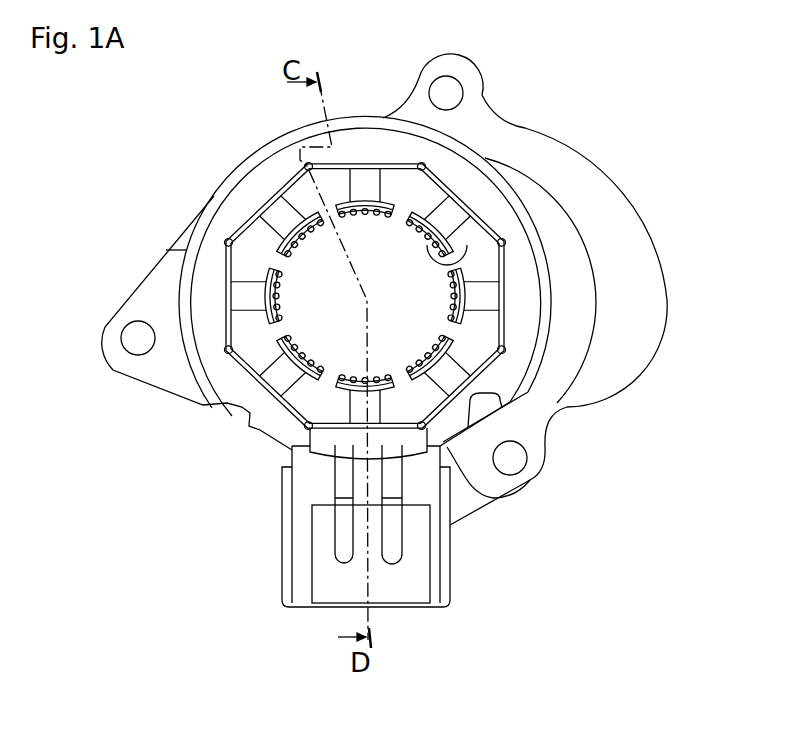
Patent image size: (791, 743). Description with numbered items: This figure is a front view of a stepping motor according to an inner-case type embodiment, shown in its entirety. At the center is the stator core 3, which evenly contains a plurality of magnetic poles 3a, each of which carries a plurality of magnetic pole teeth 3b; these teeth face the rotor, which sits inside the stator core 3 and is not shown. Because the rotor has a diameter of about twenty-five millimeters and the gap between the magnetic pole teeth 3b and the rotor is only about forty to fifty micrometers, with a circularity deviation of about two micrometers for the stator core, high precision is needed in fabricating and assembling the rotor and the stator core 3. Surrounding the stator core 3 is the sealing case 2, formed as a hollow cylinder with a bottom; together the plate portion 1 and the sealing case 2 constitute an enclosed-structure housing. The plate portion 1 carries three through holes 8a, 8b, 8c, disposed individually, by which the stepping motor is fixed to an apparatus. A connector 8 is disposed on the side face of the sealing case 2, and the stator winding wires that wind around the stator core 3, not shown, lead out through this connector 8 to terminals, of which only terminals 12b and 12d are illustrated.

The plate portion 1 is at (170, 373).
The sealing case 2 is at (272, 146).
The stator core 3 is at (522, 292).
The magnetic poles 3a is at (450, 217).
The magnetic pole teeth 3b is at (462, 250).
The connector 8 is at (303, 543).
The through hole 8a is at (437, 93).
The through hole 8b is at (513, 460).
The through hole 8c is at (143, 330).
The terminal 12b is at (343, 553).
The terminal 12d is at (397, 553).